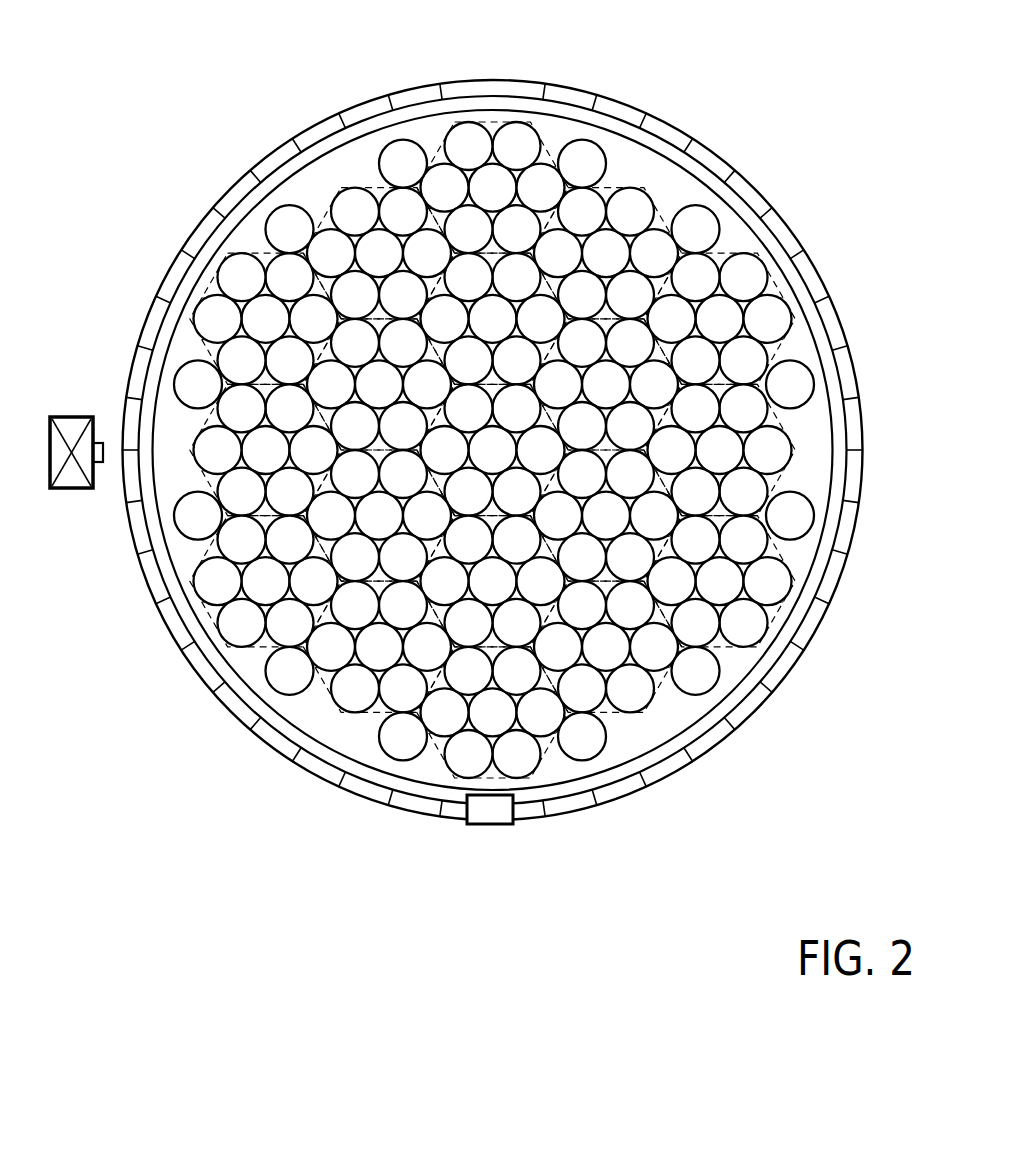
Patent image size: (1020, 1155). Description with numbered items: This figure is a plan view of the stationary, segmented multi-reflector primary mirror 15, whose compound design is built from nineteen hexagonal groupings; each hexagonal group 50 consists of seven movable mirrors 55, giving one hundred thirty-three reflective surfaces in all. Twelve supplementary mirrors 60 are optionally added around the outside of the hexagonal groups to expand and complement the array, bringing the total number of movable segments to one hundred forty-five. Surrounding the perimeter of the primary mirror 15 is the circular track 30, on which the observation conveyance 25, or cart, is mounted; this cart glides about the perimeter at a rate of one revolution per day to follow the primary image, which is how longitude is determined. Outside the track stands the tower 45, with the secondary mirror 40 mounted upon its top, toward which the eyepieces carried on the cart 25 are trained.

The stationary primary mirror 15 is at (661, 166).
The observation conveyance 25 is at (468, 822).
The circular track 30 is at (235, 721).
The secondary mirror 40 is at (98, 463).
The tower 45 is at (71, 438).
The hexagonal group 50 is at (488, 124).
The movable mirror 55 is at (400, 166).
The supplementary mirror 60 is at (268, 218).